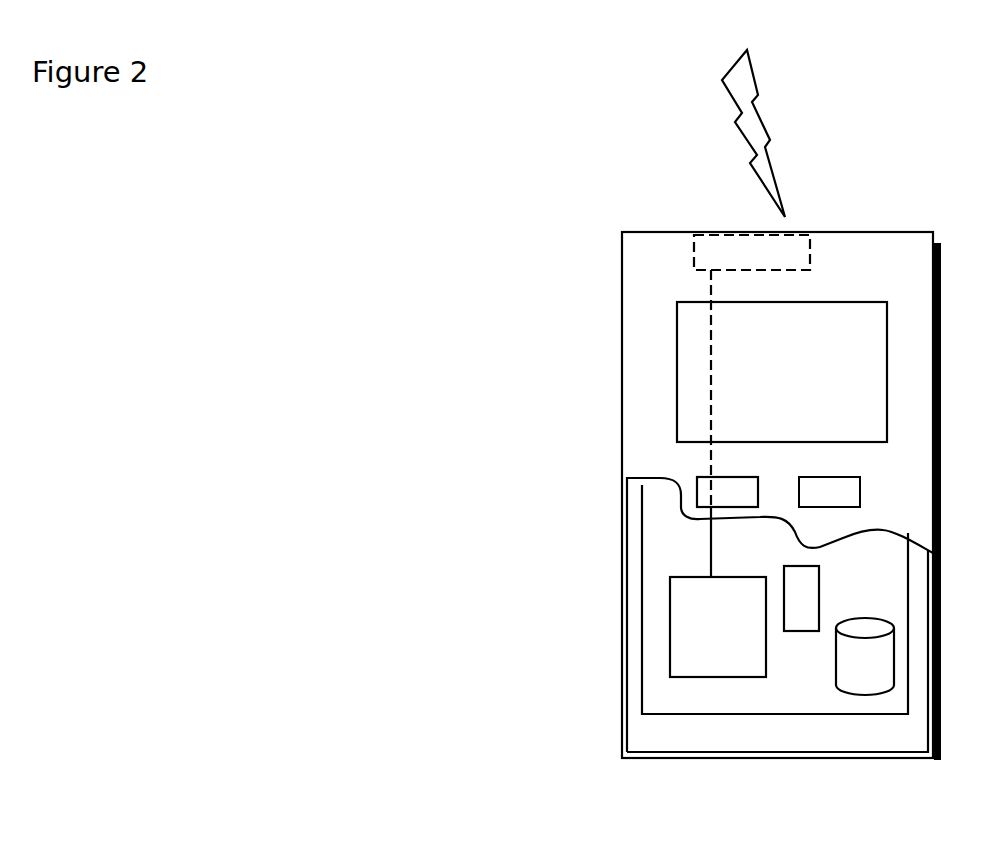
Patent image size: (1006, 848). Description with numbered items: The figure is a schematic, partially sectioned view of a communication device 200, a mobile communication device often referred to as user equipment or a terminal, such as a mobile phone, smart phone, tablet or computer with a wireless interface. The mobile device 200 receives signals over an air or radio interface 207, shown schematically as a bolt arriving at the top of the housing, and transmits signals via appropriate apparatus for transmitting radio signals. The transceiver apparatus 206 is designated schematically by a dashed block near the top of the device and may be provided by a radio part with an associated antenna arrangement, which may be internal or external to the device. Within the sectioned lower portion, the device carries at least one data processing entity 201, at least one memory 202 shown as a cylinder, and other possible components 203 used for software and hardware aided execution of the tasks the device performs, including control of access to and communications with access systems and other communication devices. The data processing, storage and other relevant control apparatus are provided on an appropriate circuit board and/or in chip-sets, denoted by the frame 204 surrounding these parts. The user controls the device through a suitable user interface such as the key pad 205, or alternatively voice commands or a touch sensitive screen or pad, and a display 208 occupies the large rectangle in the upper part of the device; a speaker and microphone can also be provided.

The communication device 200 is at (623, 275).
The data processing entity 201 is at (676, 610).
The memory 202 is at (857, 668).
The other possible components 203 is at (800, 582).
The circuit board and/or chip-sets 204 is at (669, 696).
The key pad 205 is at (698, 490).
The transceiver apparatus 206 is at (799, 247).
The air or radio interface 207 is at (788, 157).
The display 208 is at (693, 358).